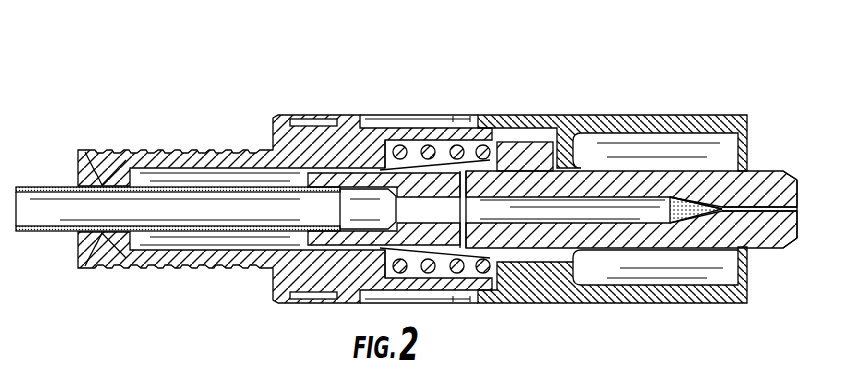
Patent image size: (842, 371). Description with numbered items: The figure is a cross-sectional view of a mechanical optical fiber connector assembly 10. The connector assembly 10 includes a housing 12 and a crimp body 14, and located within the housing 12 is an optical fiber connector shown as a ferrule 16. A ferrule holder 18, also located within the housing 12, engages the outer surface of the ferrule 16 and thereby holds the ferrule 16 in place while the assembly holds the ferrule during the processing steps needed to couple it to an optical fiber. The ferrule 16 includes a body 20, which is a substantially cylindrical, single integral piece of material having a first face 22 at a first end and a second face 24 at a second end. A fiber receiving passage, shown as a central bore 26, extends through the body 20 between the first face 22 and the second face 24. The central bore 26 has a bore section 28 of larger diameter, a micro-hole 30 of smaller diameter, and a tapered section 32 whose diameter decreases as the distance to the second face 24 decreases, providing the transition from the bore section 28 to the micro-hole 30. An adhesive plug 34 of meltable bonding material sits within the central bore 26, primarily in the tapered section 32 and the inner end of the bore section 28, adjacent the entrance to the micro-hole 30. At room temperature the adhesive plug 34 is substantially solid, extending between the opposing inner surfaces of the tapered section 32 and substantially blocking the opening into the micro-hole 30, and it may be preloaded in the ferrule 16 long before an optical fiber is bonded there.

The connector assembly 10 is at (412, 189).
The housing 12 is at (564, 128).
The crimp body 14 is at (285, 142).
The ferrule 16 is at (558, 216).
The ferrule holder 18 is at (376, 265).
The body 20 is at (754, 240).
The first face 22 is at (462, 249).
The second face 24 is at (797, 185).
The central bore 26 is at (623, 209).
The bore section 28 is at (563, 209).
The micro-hole 30 is at (738, 212).
The tapered section 32 is at (698, 196).
The adhesive plug 34 is at (692, 226).